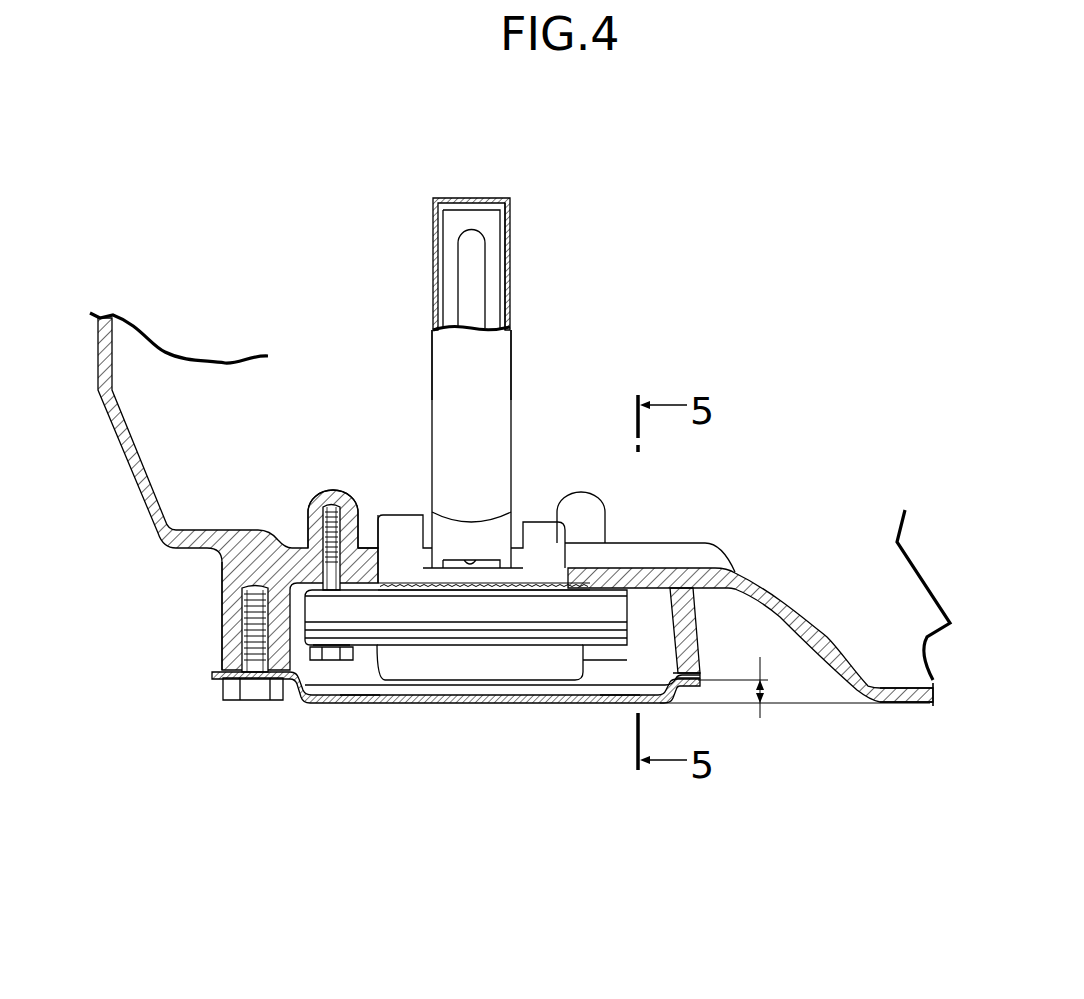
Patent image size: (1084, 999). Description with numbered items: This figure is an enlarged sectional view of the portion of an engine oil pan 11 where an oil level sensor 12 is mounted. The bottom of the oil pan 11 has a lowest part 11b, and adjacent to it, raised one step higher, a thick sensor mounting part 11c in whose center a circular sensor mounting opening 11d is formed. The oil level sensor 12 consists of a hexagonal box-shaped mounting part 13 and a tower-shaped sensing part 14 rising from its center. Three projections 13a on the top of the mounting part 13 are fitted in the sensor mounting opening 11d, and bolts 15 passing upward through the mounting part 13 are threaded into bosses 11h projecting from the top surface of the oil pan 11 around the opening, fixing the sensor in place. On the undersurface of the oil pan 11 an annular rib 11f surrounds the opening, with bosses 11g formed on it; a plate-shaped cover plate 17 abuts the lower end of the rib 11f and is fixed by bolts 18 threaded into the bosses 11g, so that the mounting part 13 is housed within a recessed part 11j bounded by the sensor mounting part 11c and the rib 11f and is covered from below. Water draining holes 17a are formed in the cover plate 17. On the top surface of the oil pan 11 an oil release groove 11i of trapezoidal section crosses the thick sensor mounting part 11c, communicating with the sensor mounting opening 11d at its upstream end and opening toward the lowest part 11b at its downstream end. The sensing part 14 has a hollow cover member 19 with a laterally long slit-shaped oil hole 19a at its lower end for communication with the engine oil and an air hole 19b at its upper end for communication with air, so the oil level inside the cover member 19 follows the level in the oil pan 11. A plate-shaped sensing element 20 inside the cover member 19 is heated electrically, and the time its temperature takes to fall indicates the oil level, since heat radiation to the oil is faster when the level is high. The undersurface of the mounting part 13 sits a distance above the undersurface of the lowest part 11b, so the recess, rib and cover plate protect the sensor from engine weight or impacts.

The oil pan 11 is at (190, 560).
The lowest part 11b is at (918, 700).
The sensor mounting part 11c is at (637, 578).
The sensor mounting opening 11d is at (381, 515).
The annular rib 11f is at (686, 636).
The boss 11g is at (220, 627).
The boss 11h is at (297, 547).
The oil release groove 11i is at (660, 568).
The recessed part 11j is at (697, 658).
The oil level sensor 12 is at (540, 388).
The mounting part 13 is at (492, 693).
The projection 13a is at (404, 520).
The sensing part 14 is at (520, 332).
The bolt 15 is at (331, 655).
The cover plate 17 is at (512, 712).
The water draining hole 17a is at (362, 703).
The bolt 18 is at (257, 697).
The cover member 19 is at (425, 297).
The oil hole 19a is at (470, 565).
The air hole 19b is at (512, 228).
The sensing element 20 is at (455, 212).